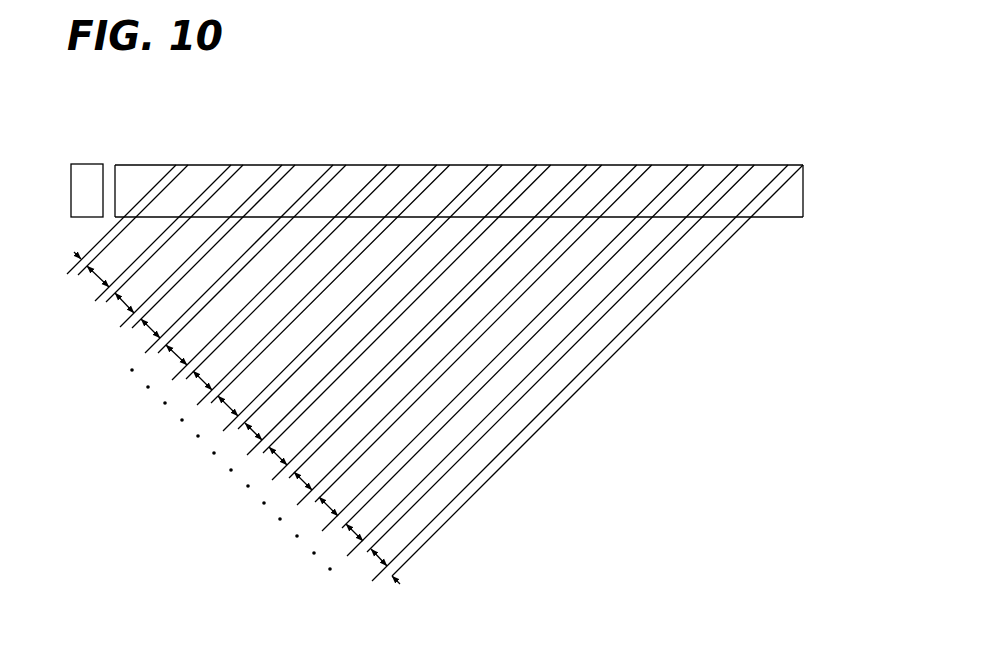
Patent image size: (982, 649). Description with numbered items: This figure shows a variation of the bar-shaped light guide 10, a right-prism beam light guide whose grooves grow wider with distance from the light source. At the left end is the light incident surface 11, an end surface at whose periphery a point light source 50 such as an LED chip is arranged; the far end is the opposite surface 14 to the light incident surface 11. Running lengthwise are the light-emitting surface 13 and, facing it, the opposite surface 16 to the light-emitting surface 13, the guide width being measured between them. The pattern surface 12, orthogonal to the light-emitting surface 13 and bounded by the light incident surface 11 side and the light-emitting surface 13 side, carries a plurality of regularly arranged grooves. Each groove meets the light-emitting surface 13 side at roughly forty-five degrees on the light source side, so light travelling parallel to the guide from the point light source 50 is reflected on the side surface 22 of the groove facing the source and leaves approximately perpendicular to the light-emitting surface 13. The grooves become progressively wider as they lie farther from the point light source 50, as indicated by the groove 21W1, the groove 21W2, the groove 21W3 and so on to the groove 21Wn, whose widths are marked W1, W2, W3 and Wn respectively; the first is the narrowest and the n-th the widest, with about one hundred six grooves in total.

The bar-shaped light guide 10 is at (461, 330).
The light incident surface 11 is at (115, 178).
The pattern surface 12 is at (664, 174).
The light-emitting surface 13 is at (565, 165).
The opposite surface to the light incident surface 14 is at (805, 190).
The opposite surface to the light-emitting surface 16 is at (784, 208).
The side surface of the groove 22 is at (521, 180).
The groove 21W1 is at (175, 166).
The groove 21W2 is at (232, 166).
The groove 21W3 is at (282, 166).
The groove 21Wn is at (788, 170).
The point light source 50 is at (70, 192).
The width of the groove W1 is at (76, 277).
The width of the groove W2 is at (100, 309).
The width of the groove W3 is at (124, 333).
The width of the groove Wn is at (376, 579).